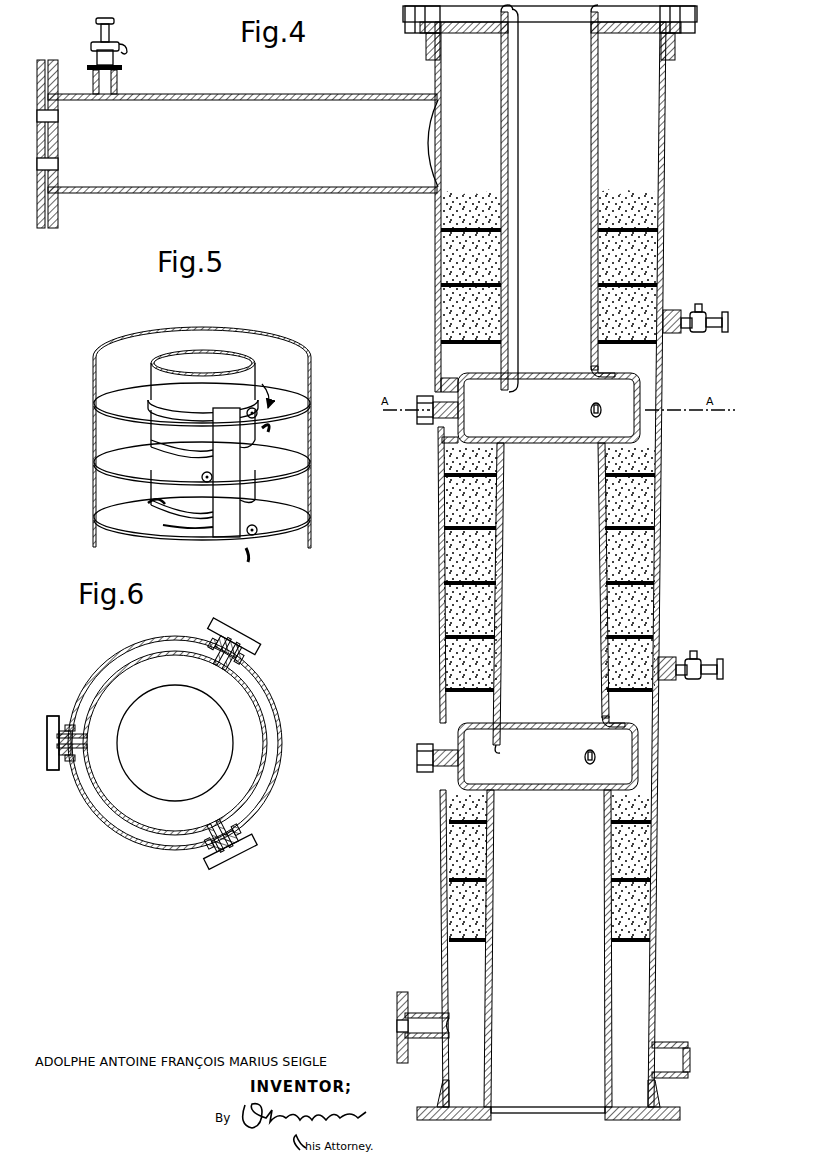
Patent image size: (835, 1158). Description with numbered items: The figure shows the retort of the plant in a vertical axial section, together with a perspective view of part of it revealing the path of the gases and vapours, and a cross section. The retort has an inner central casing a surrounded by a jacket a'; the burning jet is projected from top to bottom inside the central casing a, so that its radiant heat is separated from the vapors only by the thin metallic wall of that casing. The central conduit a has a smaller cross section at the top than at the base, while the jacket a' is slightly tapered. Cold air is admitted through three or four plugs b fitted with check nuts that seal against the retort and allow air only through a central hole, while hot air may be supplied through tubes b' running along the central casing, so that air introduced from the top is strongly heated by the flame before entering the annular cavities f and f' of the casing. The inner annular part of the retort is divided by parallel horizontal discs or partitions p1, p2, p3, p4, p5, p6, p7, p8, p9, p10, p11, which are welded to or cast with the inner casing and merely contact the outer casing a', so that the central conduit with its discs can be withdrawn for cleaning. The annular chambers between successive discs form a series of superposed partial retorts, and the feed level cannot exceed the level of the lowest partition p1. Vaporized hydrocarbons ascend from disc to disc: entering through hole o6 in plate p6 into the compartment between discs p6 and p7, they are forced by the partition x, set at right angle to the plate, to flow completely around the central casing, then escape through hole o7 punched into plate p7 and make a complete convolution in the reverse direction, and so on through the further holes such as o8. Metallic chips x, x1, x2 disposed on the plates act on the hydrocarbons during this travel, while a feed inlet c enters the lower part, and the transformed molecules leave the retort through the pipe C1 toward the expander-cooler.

In FIG. 4, the central casing a is at (554, 556).
In FIG. 5, the central casing a is at (203, 356).
In FIG. 6, the central casing a is at (175, 743).
In FIG. 4, the jacket a' is at (550, 563).
In FIG. 5, the jacket a' is at (226, 437).
In FIG. 4, the plugs b is at (500, 552).
In FIG. 6, the plugs b is at (150, 750).
In FIG. 4, the tubes b' is at (531, 306).
In FIG. 4, the inlet pipe c is at (420, 1027).
In FIG. 4, the pipe C1 is at (313, 172).
In FIG. 4, the annular cavity f is at (572, 411).
In FIG. 4, the annular cavity f' is at (574, 756).
In FIG. 4, the partition p1 is at (566, 939).
In FIG. 4, the partition p2 is at (566, 877).
In FIG. 4, the partition p3 is at (566, 819).
In FIG. 4, the partition p4 is at (563, 689).
In FIG. 4, the partition p5 is at (564, 633).
In FIG. 4, the plate p6 is at (564, 581).
In FIG. 5, the plate p6 is at (218, 518).
In FIG. 4, the plate p7 is at (564, 523).
In FIG. 5, the plate p7 is at (218, 463).
In FIG. 4, the partition p8 is at (564, 467).
In FIG. 5, the partition p8 is at (218, 404).
In FIG. 4, the partition p9 is at (562, 343).
In FIG. 4, the partition p10 is at (566, 283).
In FIG. 4, the partition p11 is at (566, 226).
In FIG. 4, the partition x is at (637, 917).
In FIG. 5, the partition x is at (224, 500).
In FIG. 4, the metallic chips x1 is at (640, 562).
In FIG. 4, the metallic chips x2 is at (640, 262).
In FIG. 5, the hole o6 is at (258, 530).
In FIG. 5, the hole o7 is at (201, 477).
In FIG. 5, the bolt o8 is at (258, 413).